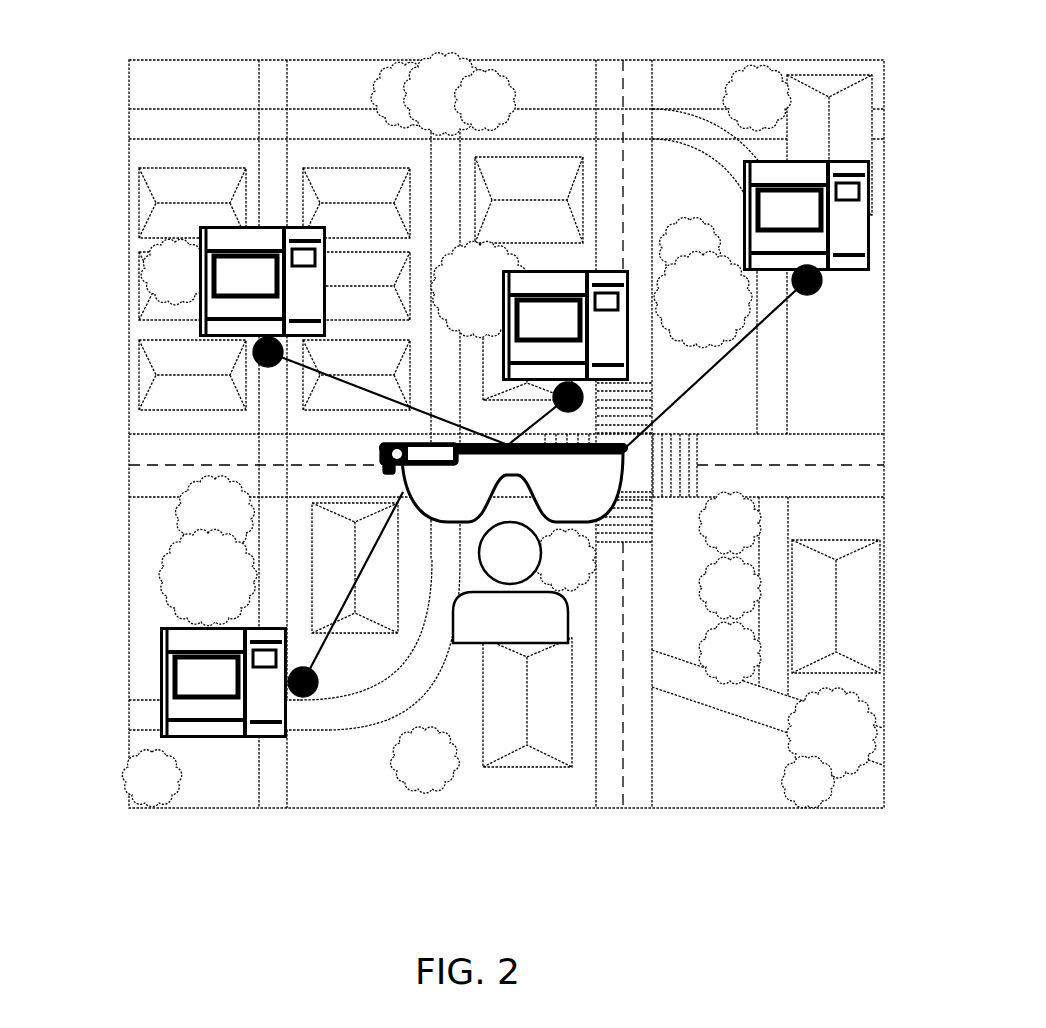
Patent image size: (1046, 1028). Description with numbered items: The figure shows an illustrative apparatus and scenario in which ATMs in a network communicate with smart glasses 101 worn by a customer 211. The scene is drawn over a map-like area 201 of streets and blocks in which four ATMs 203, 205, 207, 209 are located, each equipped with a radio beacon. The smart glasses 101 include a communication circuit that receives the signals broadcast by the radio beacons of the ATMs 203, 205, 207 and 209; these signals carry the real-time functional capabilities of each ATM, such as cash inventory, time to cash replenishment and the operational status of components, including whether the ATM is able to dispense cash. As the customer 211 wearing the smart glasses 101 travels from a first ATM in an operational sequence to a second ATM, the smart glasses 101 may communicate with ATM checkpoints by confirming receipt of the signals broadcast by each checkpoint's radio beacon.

The smart glasses 101 is at (443, 523).
The map of area 201 is at (503, 60).
The ATM 203 is at (873, 222).
The ATM 205 is at (551, 270).
The ATM 207 is at (199, 262).
The ATM 209 is at (160, 682).
The customer 211 is at (488, 648).